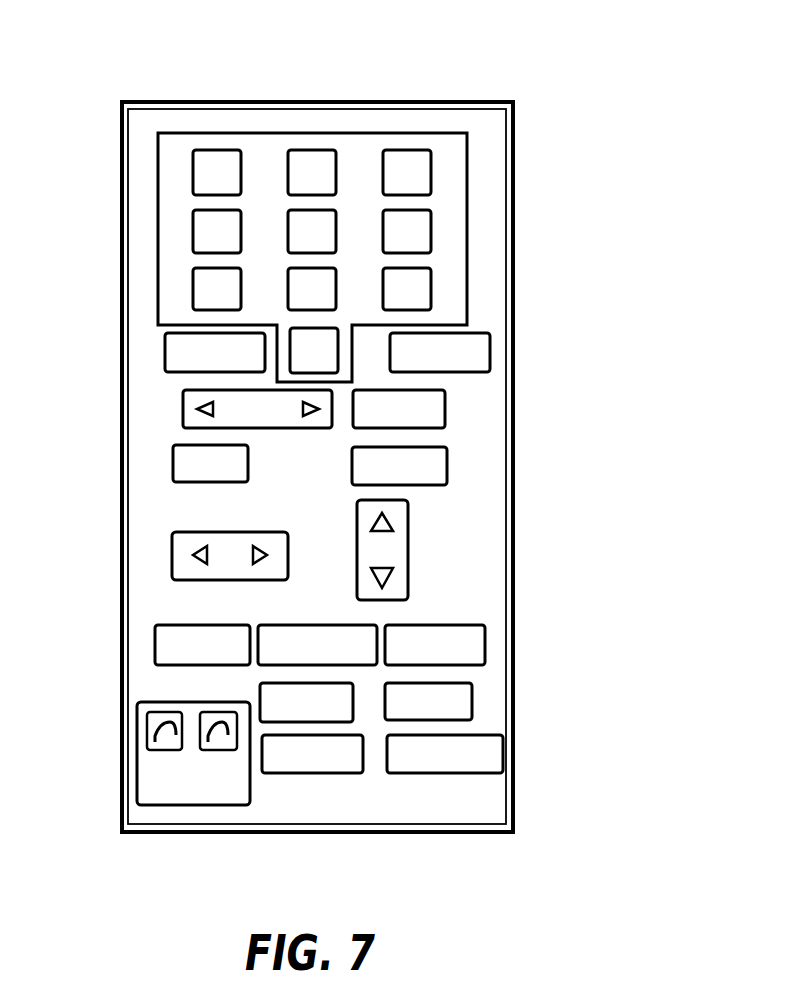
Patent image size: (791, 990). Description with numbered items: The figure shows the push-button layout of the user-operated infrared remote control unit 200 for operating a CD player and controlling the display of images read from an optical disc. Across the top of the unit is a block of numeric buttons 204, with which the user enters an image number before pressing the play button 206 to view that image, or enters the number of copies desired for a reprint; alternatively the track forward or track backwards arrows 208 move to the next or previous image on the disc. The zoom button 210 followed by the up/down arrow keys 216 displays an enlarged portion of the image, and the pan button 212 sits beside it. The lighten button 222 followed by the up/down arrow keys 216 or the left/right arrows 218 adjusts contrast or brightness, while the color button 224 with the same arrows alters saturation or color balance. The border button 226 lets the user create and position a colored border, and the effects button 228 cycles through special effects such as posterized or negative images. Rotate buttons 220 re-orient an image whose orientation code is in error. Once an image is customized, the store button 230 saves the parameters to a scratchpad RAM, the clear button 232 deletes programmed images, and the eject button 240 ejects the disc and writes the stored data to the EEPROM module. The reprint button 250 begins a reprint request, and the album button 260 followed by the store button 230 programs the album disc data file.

The IR remote control unit 200 is at (121, 154).
The buttons 204 is at (350, 133).
The clear button 232 is at (165, 351).
The store button 230 is at (490, 352).
The track forward or track backwards arrows 208 is at (183, 408).
The play button 206 is at (445, 408).
The pan button 212 is at (173, 465).
The zoom button 210 is at (447, 463).
The left/right arrows 218 is at (172, 548).
The up/down arrow keys 216 is at (408, 552).
The eject button 240 is at (155, 640).
The reprint button 250 is at (320, 625).
The album button 260 is at (485, 638).
The rotate buttons 220 is at (137, 756).
The color button 224 is at (353, 702).
The border button 226 is at (303, 773).
The lighten button 222 is at (472, 702).
The effects button 228 is at (503, 760).